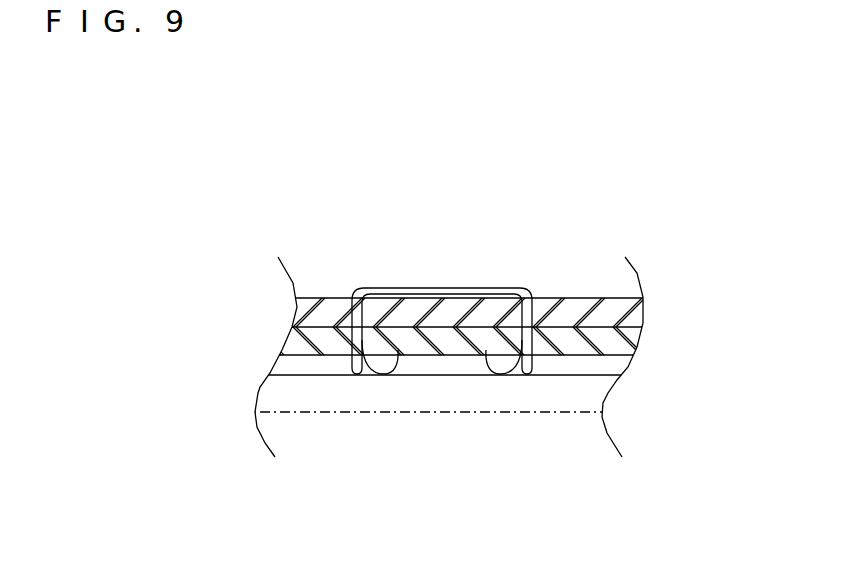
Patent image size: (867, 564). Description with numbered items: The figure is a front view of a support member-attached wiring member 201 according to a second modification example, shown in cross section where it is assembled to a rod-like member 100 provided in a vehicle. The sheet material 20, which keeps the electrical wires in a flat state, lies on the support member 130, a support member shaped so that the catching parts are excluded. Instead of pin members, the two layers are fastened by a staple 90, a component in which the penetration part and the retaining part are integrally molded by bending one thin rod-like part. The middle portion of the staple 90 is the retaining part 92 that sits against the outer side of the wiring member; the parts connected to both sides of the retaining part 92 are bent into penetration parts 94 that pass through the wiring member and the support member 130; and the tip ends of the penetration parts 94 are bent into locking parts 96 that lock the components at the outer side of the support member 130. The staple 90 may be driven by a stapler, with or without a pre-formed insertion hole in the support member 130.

The support member-attached wiring member 201 is at (231, 158).
The rod-like member 100 is at (461, 415).
The sheet material 20 is at (583, 298).
The support member 130 is at (631, 334).
The staple 90 is at (347, 210).
The retaining part 92 is at (447, 290).
The penetration part 94 is at (369, 292).
The locking part 96 is at (397, 340).